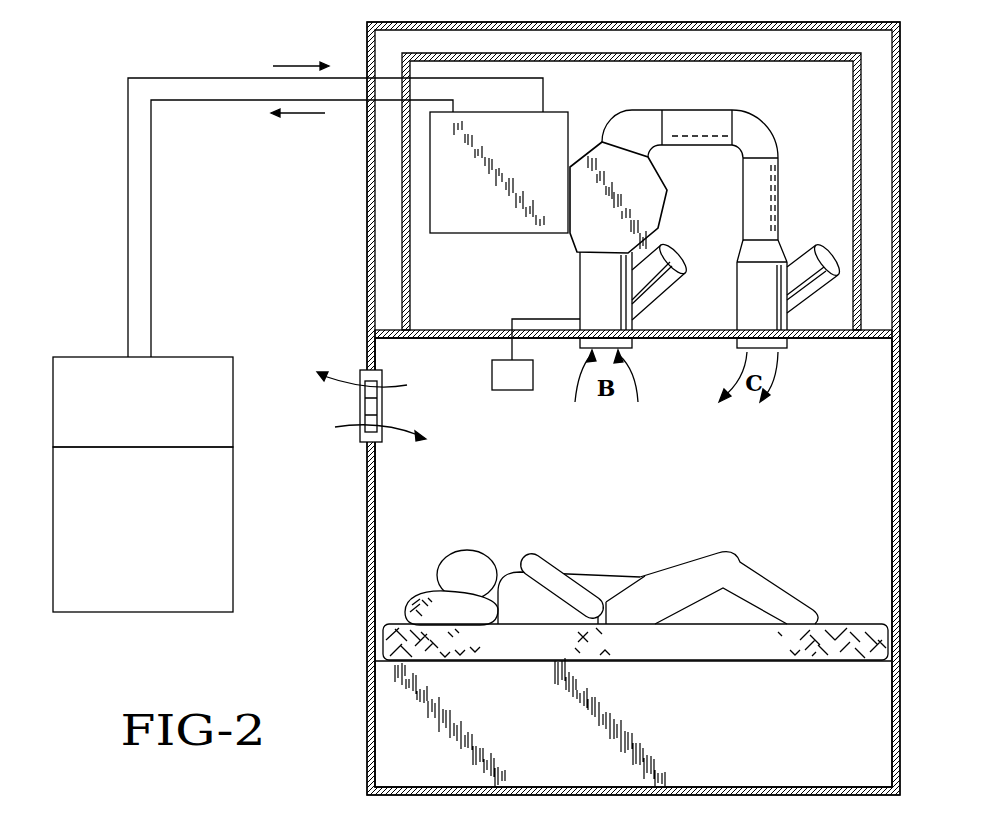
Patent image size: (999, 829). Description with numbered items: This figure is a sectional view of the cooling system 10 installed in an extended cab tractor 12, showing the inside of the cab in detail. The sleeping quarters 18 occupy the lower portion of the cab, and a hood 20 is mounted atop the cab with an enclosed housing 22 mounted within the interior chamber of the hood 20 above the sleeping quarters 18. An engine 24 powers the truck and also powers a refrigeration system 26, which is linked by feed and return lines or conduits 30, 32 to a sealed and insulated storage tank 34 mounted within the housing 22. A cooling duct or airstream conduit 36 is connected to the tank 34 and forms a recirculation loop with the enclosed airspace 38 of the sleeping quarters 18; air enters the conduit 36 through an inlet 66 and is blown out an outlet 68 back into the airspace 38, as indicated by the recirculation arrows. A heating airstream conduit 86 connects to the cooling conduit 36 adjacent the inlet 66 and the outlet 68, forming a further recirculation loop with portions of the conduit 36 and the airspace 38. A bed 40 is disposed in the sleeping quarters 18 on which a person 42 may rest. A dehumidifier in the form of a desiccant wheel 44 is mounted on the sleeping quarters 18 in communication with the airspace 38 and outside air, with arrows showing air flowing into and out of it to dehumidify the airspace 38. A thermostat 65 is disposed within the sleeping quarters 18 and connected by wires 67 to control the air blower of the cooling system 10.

The cooling system 10 is at (197, 42).
The extended cab tractor 12 is at (912, 698).
The sleeping quarters 18 is at (902, 463).
The hood 20 is at (900, 59).
The enclosed housing 22 is at (861, 104).
The engine 24 is at (147, 612).
The refrigeration system 26 is at (88, 367).
The feed line 30 is at (128, 238).
The return line 32 is at (151, 220).
The storage tank 34 is at (560, 115).
The cooling airstream conduit 36 is at (688, 108).
The enclosed airspace 38 is at (849, 395).
The bed 40 is at (676, 661).
The person 42 is at (758, 571).
The desiccant wheel 44 is at (360, 410).
The thermostat 65 is at (514, 384).
The inlet 66 is at (620, 349).
The wires 67 is at (521, 317).
The outlet 68 is at (782, 350).
The heating airstream conduit 86 is at (652, 283).